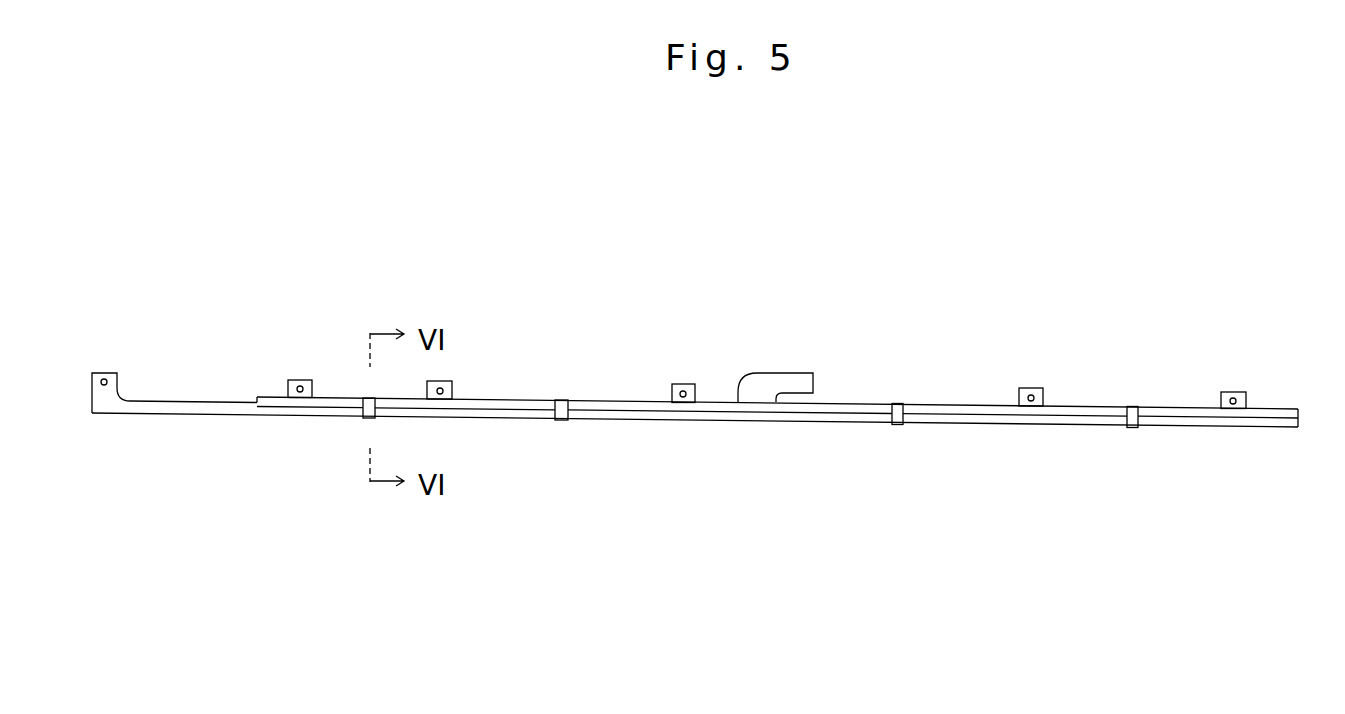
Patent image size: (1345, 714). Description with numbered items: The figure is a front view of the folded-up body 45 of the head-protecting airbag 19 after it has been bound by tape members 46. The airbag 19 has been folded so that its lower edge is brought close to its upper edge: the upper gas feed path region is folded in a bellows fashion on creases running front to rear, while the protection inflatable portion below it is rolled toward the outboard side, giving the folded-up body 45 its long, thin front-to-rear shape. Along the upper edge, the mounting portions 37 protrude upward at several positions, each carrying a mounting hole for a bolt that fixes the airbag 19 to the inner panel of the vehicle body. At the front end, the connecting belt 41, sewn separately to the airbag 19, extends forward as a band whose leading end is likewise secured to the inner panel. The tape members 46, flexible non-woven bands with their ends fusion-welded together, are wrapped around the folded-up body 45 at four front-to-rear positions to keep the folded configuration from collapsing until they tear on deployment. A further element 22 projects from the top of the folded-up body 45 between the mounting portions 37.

The folded-up body 45 is at (695, 308).
The airbag 19 is at (695, 403).
The connecting belt 41 is at (190, 408).
The tape member 46 is at (370, 418).
The mounting portion 37 is at (682, 383).
The hook 22 is at (787, 372).